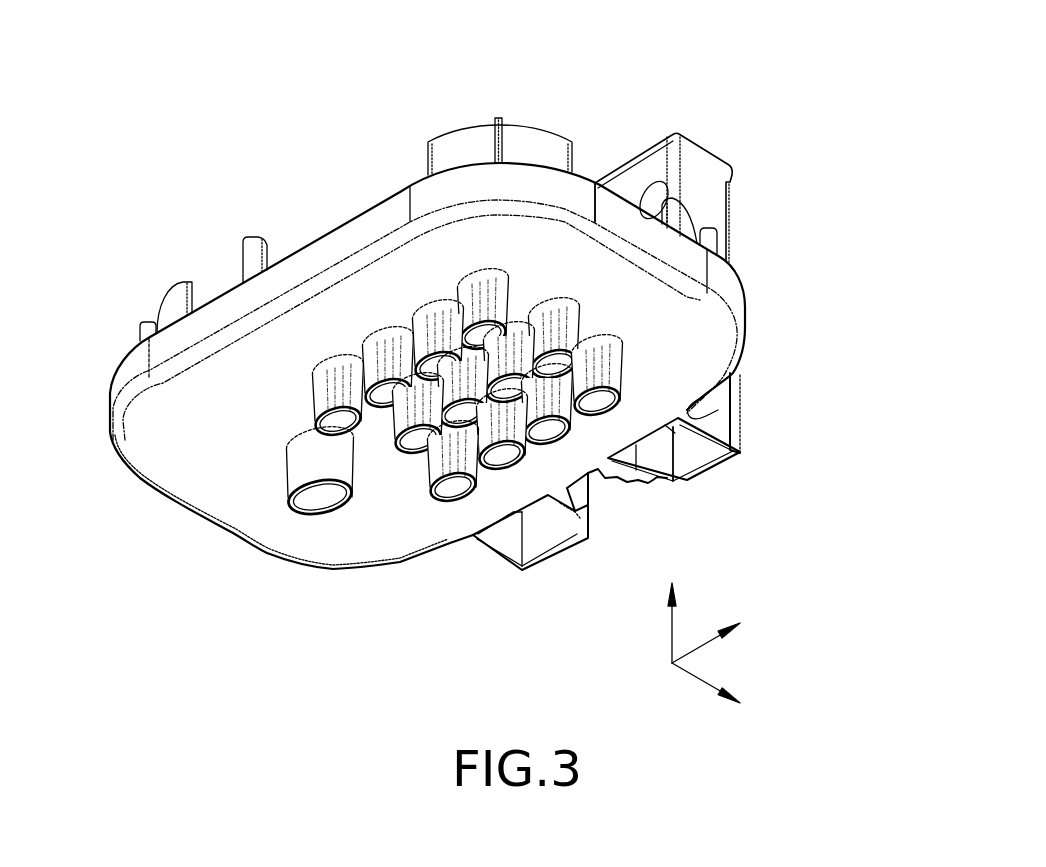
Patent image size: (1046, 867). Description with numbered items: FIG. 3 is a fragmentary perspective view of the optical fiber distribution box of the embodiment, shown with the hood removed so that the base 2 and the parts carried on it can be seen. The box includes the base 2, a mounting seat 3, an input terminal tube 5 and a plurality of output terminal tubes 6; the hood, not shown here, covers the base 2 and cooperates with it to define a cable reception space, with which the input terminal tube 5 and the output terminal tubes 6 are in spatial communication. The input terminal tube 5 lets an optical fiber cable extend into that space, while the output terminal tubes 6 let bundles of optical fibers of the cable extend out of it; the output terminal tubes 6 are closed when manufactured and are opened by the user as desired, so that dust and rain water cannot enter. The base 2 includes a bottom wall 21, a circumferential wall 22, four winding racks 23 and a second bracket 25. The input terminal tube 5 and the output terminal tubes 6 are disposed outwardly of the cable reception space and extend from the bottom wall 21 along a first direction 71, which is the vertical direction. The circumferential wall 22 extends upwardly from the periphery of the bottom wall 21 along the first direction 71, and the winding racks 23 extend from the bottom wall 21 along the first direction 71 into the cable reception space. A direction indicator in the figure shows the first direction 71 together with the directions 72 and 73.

The base 2 is at (242, 584).
The bottom wall 21 is at (348, 556).
The circumferential wall 22 is at (123, 375).
The winding racks 23 is at (544, 103).
The second bracket 25 is at (232, 207).
The mounting seat 3 is at (777, 193).
The input terminal tube 5 is at (297, 480).
The output terminal tubes 6 is at (322, 405).
The first direction 71 is at (682, 605).
The second axis direction 72 is at (726, 696).
The third axis direction 73 is at (724, 633).